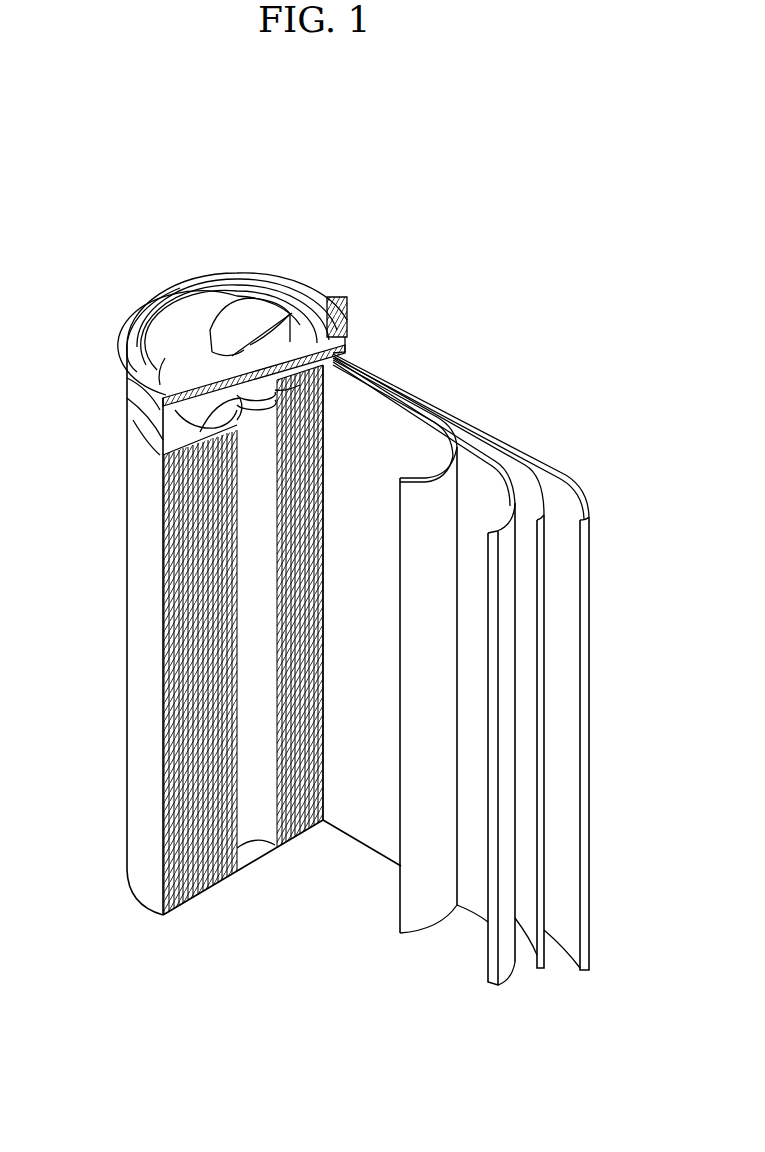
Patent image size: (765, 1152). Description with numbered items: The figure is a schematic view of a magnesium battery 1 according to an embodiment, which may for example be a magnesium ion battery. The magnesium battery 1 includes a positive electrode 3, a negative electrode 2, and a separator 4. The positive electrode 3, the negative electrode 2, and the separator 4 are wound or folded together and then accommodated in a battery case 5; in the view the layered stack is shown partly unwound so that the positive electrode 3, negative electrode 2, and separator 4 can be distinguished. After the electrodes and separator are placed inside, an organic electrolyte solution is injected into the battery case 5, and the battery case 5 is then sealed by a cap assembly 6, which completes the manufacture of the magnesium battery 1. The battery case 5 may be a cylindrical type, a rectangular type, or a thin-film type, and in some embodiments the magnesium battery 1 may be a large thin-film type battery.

The magnesium battery 1 is at (470, 292).
The negative electrode 2 is at (568, 490).
The positive electrode 3 is at (503, 490).
The separator 4 is at (428, 482).
The battery case 5 is at (129, 634).
The cap assembly 6 is at (232, 312).